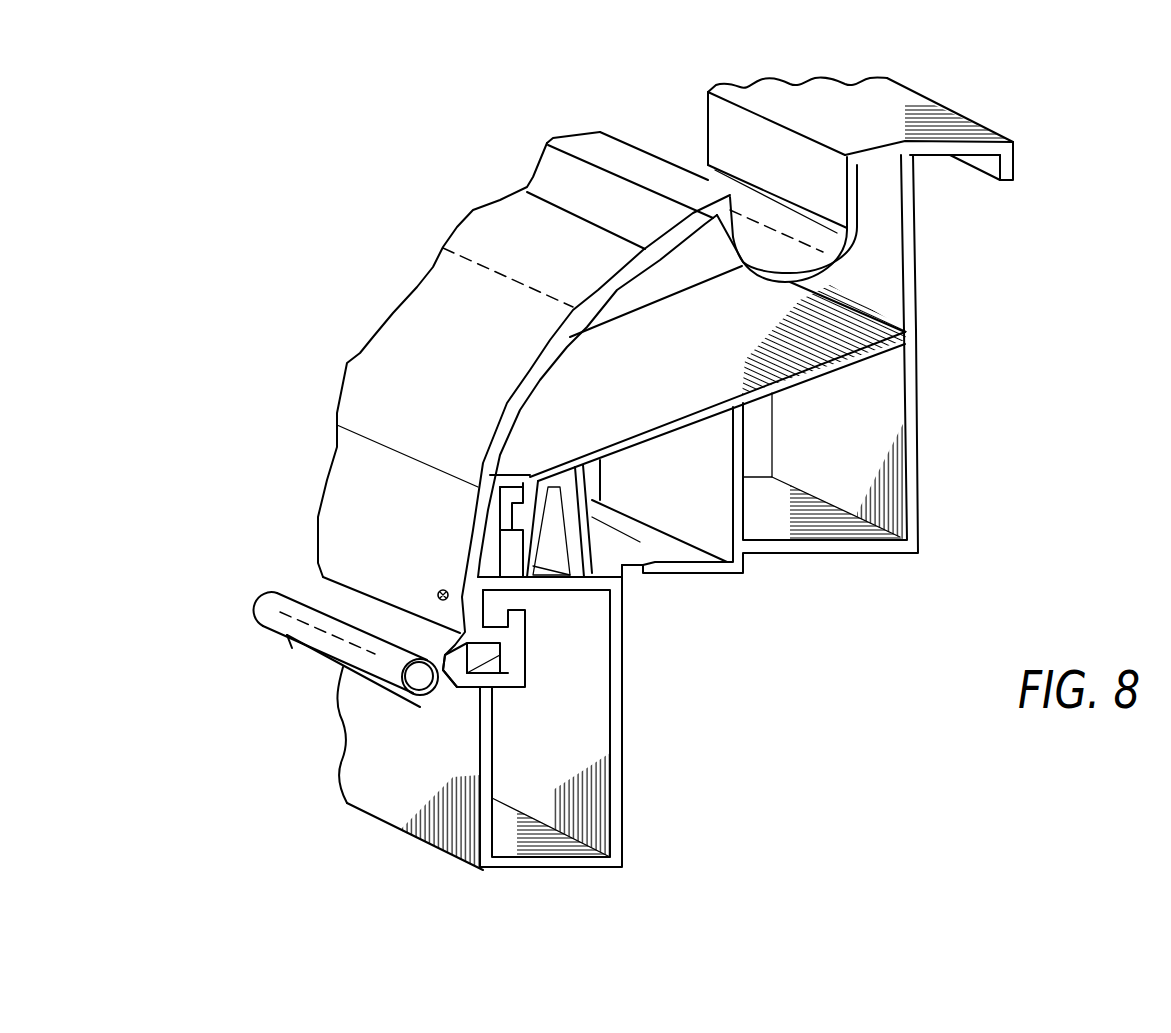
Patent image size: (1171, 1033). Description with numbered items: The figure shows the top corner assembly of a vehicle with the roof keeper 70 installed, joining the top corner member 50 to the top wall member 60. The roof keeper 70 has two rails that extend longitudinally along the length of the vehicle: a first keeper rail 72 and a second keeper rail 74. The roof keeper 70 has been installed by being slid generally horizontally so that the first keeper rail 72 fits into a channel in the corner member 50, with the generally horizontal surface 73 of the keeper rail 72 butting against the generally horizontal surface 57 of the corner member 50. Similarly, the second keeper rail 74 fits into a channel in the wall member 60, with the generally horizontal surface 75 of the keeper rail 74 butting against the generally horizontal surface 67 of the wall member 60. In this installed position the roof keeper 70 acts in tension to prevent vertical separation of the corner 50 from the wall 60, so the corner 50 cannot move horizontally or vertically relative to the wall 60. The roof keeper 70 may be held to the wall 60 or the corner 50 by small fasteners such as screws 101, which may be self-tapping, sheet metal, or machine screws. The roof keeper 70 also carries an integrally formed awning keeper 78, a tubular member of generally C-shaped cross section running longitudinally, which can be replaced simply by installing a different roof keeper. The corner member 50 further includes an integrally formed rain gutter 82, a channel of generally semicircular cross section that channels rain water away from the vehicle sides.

The top corner member 50 is at (426, 269).
The rain gutter 82 is at (708, 180).
The roof keeper 70 is at (305, 515).
The first keeper rail 72 is at (512, 503).
The generally horizontal surface 57 is at (516, 500).
The horizontal surface 73 is at (485, 513).
The screws 101 is at (437, 595).
The awning keeper 78 is at (258, 605).
The horizontal surface 75 is at (483, 620).
The generally horizontal surface 67 is at (497, 627).
The second keeper rail 74 is at (478, 659).
The top wall member 60 is at (345, 739).